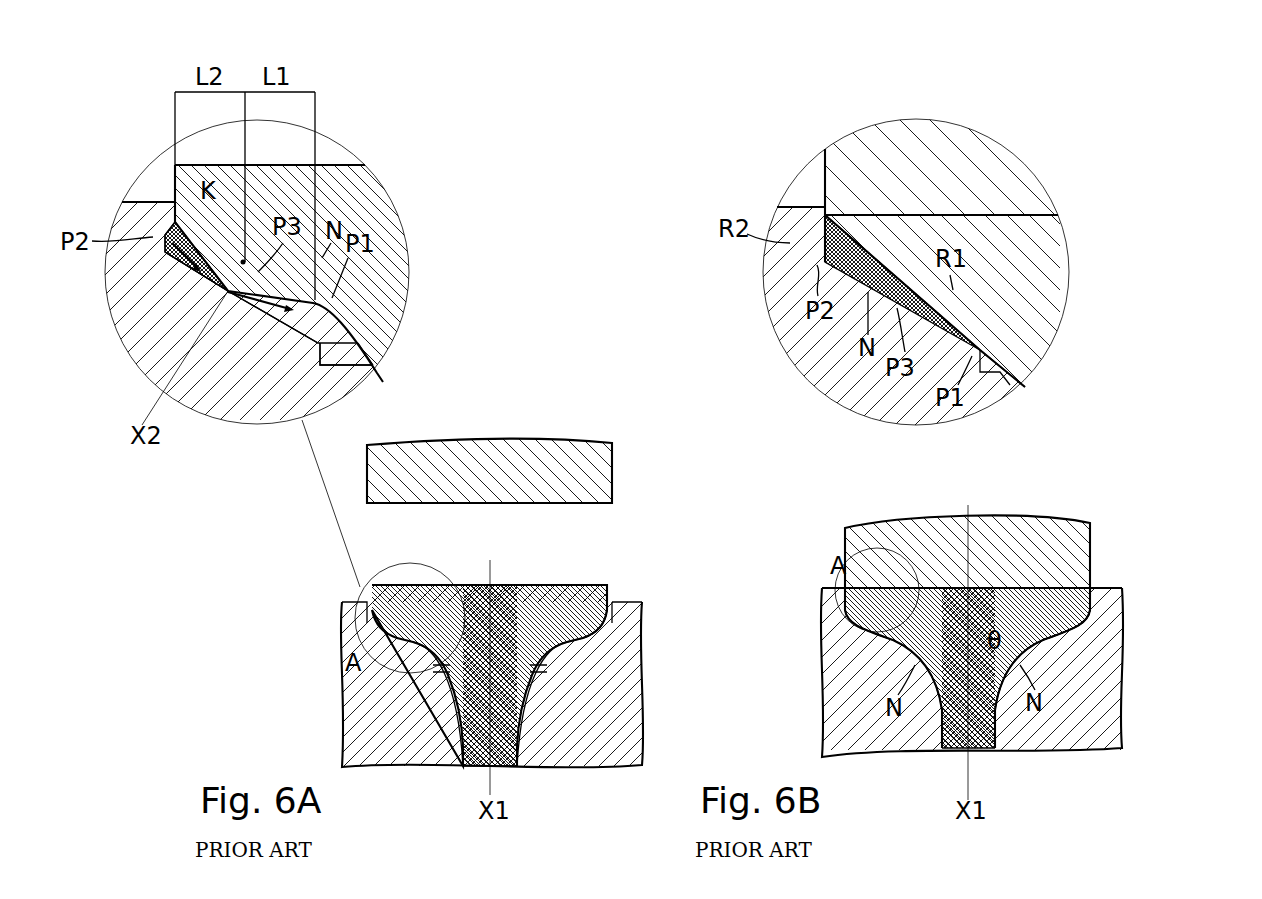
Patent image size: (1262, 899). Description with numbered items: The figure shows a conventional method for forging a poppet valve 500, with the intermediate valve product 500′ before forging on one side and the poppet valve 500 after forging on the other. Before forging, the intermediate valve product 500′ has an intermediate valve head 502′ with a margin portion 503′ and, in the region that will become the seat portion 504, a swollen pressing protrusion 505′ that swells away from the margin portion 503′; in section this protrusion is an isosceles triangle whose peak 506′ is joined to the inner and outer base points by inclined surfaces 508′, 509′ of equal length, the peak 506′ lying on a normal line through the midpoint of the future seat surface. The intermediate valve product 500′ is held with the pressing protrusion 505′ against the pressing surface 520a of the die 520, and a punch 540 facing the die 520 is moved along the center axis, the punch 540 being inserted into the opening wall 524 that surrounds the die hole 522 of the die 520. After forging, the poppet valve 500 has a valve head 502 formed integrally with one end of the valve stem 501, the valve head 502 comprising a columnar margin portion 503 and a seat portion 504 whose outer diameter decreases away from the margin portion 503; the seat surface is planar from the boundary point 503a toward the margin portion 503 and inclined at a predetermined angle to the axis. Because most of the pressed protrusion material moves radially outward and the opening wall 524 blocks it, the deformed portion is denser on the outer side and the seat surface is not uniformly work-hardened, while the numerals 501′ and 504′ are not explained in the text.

In FIG. 6A, the poppet valve 500 is at (324, 163).
In FIG. 6B, the poppet valve 500 is at (987, 208).
In FIG. 6A, the intermediate valve product before forging 500′ is at (609, 586).
In FIG. 6B, the valve stem 501 is at (960, 750).
In FIG. 6A, the prior art die bottom face 501′ is at (477, 766).
In FIG. 6B, the valve head 502 is at (950, 220).
In FIG. 6A, the intermediate valve head 502′ is at (700, 575).
In FIG. 6B, the margin portion 503 is at (1122, 590).
In FIG. 6A, the margin portion 503′ is at (614, 592).
In FIG. 6B, the boundary point 503a is at (900, 627).
In FIG. 6B, the seat portion 504 is at (1042, 318).
In FIG. 6A, the prior art curved surface portion 504′ is at (616, 612).
In FIG. 6A, the pressing protrusion 505′ is at (245, 260).
In FIG. 6A, the peak 506′ is at (262, 308).
In FIG. 6A, the inclined surface 508′ is at (302, 325).
In FIG. 6A, the inclined surface 509′ is at (198, 282).
In FIG. 6A, the die 520 is at (258, 416).
In FIG. 6B, the die 520 is at (783, 290).
In FIG. 6A, the pressing surface 520a is at (328, 358).
In FIG. 6B, the pressing surface 520a is at (900, 676).
In FIG. 6A, the die hole 522 is at (172, 204).
In FIG. 6B, the die hole 522 is at (820, 206).
In FIG. 6A, the opening wall 524 is at (152, 217).
In FIG. 6B, the opening wall 524 is at (797, 201).
In FIG. 6A, the punch 540 is at (614, 462).
In FIG. 6B, the punch 540 is at (863, 142).